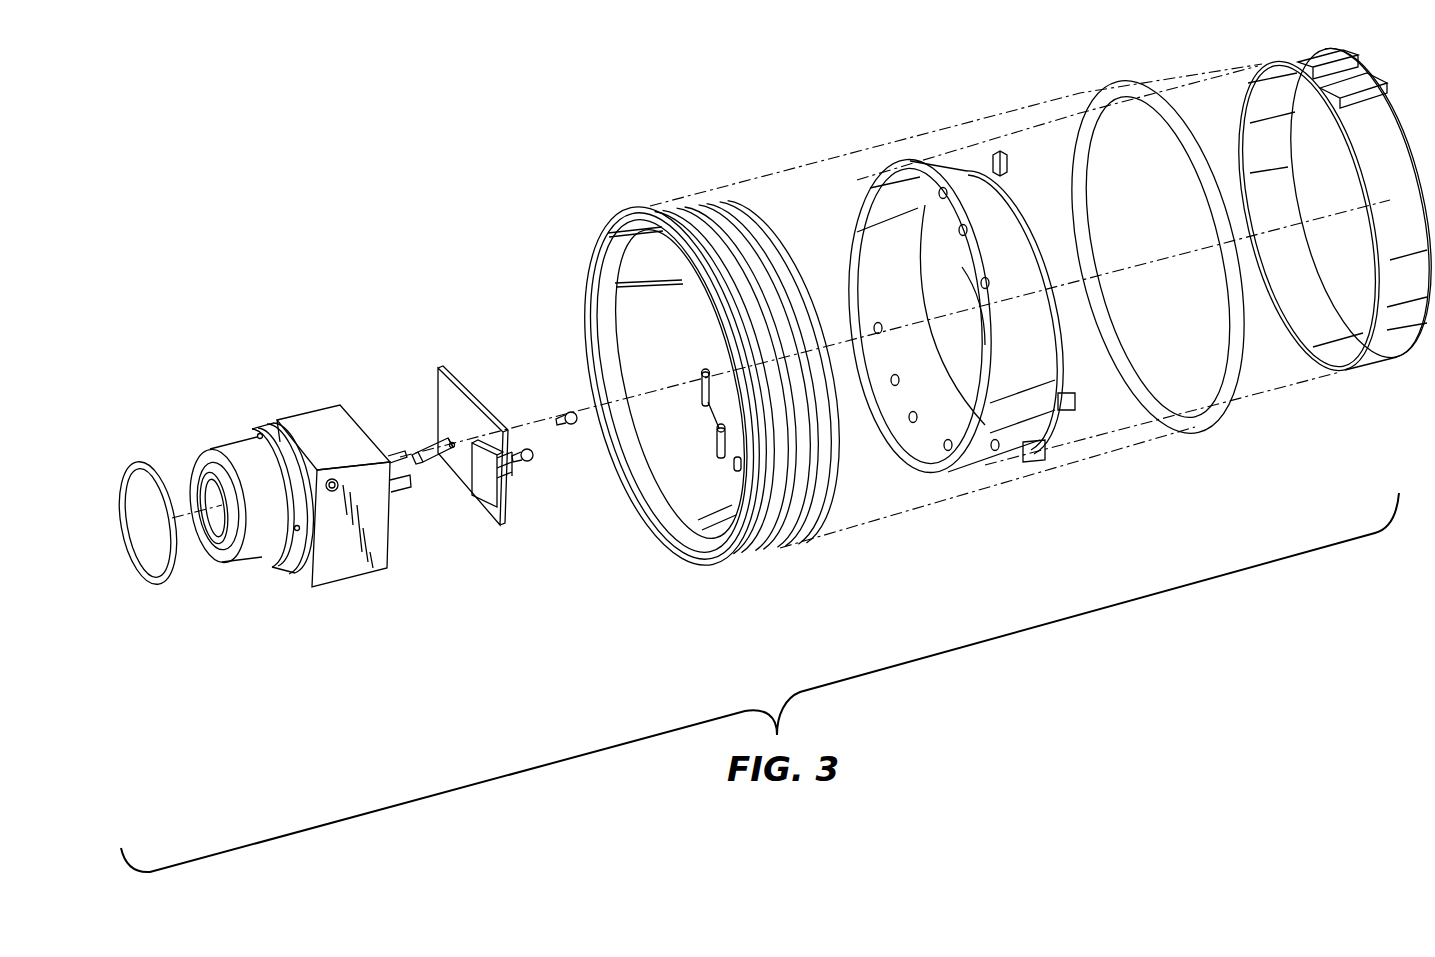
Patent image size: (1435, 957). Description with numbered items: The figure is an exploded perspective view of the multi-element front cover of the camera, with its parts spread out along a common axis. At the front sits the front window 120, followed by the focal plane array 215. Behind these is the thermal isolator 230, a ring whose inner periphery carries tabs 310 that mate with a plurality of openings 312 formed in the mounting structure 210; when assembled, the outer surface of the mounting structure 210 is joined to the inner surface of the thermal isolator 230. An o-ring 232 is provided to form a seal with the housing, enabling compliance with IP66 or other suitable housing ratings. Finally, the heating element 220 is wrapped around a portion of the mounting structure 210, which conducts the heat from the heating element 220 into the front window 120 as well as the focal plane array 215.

The front window 120 is at (217, 450).
The focal plane array 215 is at (445, 367).
The thermal isolator 230 is at (696, 421).
The tabs 310 is at (717, 430).
The openings 312 is at (912, 422).
The mounting structure 210 is at (956, 364).
The o-ring 232 is at (1220, 420).
The heating element 220 is at (1400, 353).